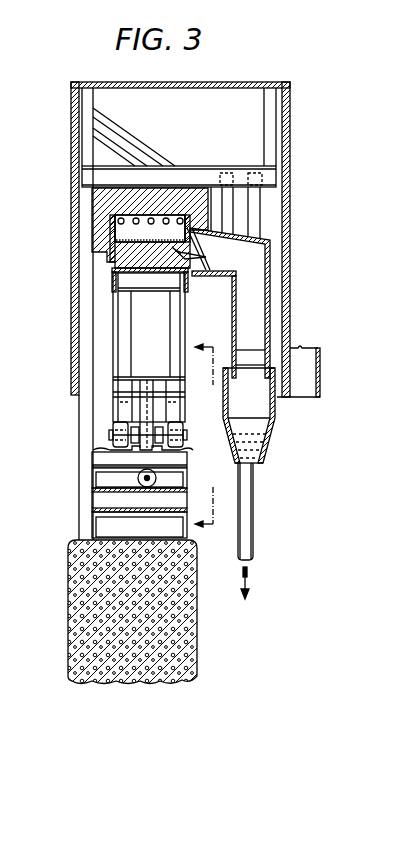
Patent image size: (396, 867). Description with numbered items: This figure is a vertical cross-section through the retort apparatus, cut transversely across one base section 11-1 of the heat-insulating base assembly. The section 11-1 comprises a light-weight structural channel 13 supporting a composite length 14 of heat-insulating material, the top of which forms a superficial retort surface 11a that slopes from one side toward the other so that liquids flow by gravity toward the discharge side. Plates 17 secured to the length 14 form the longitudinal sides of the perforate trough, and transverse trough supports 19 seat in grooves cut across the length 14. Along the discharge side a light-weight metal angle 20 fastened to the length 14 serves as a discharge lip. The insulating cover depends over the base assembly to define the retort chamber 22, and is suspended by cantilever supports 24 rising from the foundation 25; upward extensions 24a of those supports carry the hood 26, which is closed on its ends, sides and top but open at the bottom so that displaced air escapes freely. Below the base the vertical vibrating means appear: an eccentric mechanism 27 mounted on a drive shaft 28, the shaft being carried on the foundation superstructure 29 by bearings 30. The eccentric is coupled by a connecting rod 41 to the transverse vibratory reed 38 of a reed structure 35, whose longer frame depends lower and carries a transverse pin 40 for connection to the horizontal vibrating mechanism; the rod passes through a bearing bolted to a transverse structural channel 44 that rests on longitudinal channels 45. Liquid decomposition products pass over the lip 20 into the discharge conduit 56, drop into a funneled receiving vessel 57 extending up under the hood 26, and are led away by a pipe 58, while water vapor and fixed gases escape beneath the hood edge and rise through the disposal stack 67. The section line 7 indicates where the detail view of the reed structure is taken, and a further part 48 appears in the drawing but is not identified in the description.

The section line 7 is at (214, 436).
The elongate section of the base assembly 11-1 is at (107, 263).
The superficial retort surface 11a is at (203, 246).
The light-weight structural channel 13 is at (110, 272).
The composite length of heat-insulation material 14 is at (148, 260).
The plates 17 is at (110, 248).
The transverse trough supports 19 is at (212, 256).
The light-weight metal angle 20 is at (196, 271).
The elongate retort chamber 22 is at (132, 228).
The cantilever supports 24 is at (272, 172).
The upward extensions of the cantilever supports 24a is at (270, 103).
The foundation 25 is at (70, 634).
The hood 26 is at (290, 123).
The eccentric mechanism 27 is at (137, 478).
The drive shaft 28 is at (147, 481).
The foundation superstructure 29 is at (88, 520).
The bearings 30 is at (136, 490).
The reed structure 35 is at (108, 343).
The transverse vibratory reed 38 is at (113, 413).
The transverse pin 40 is at (110, 437).
The connecting rod 41 is at (150, 412).
The transverse structural channel 44 is at (100, 455).
The longitudinal channels 45 is at (93, 476).
The axle 48 is at (175, 440).
The discharge conduit 56 is at (233, 313).
The funneled receiving vessel 57 is at (275, 423).
The pipe 58 is at (253, 508).
The disposal stack 67 is at (300, 360).